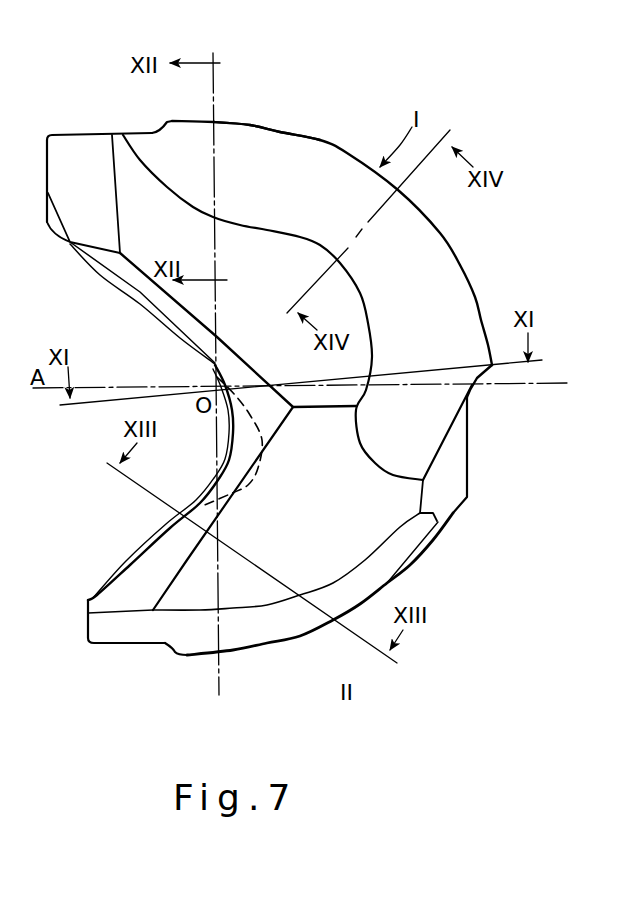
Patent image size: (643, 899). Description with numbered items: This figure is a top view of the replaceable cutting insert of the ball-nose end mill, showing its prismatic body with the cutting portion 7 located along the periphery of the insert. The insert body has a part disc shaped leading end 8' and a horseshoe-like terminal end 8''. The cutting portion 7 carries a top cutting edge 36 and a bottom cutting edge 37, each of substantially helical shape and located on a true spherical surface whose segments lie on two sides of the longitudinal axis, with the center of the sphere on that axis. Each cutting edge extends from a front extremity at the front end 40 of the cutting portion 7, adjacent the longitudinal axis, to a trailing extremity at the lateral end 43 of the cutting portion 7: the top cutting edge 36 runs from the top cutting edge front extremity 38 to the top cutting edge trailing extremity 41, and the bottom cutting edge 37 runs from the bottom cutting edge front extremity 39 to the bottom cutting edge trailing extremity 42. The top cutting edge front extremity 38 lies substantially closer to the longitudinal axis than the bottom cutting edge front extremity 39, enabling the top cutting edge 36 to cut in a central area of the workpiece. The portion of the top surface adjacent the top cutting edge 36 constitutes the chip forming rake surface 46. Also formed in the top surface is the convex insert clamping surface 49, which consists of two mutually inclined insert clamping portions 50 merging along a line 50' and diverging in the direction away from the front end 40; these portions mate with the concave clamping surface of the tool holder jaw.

The cutting portion 7 is at (325, 375).
The leading end 8' is at (267, 83).
The terminal end 8'' is at (127, 522).
The top cutting edge 36 is at (440, 237).
The bottom cutting edge 37 is at (413, 567).
The top cutting edge front extremity 38 is at (492, 365).
The bottom cutting edge front extremity 39 is at (443, 527).
The front end 40 is at (627, 382).
The top cutting edge trailing extremity 41 is at (172, 120).
The bottom cutting edge trailing extremity 42 is at (182, 655).
The lateral end 43 is at (125, 125).
The chip forming rake surface 46 is at (317, 163).
The insert clamping surface 49 is at (300, 543).
The insert clamping portions 50 is at (213, 389).
The merging line 50' is at (368, 388).